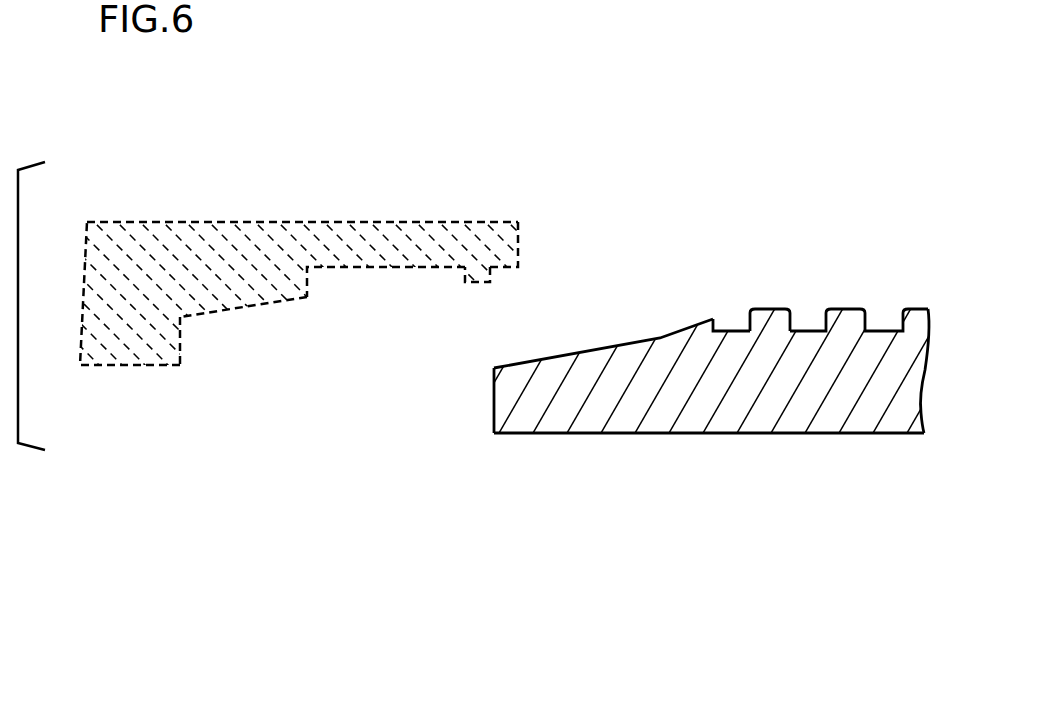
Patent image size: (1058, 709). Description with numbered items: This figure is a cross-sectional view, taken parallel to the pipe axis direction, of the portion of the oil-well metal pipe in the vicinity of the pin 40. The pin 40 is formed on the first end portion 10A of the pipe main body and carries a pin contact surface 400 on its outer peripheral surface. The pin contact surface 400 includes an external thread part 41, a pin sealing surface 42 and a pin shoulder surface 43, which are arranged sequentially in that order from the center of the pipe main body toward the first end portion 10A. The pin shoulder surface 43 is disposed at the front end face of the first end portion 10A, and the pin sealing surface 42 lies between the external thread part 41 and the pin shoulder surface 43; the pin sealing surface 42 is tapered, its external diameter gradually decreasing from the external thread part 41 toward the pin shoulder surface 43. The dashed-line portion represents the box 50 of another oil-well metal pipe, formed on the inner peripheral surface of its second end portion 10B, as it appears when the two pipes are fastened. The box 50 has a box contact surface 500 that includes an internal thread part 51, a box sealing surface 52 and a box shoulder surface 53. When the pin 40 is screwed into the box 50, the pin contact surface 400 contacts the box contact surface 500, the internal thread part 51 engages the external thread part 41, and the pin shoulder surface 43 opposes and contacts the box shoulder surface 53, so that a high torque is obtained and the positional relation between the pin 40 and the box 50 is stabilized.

The box 50 is at (264, 98).
The pin 40 is at (727, 98).
The second end portion 10B is at (365, 210).
The first end portion 10A is at (700, 456).
The pin contact surface 400 is at (647, 250).
The external thread part 41 is at (778, 310).
The pin sealing surface 42 is at (560, 357).
The pin shoulder surface 43 is at (494, 405).
The internal thread part 51 is at (477, 287).
The box sealing surface 52 is at (290, 304).
The box shoulder surface 53 is at (186, 343).
The box contact surface 500 is at (284, 408).